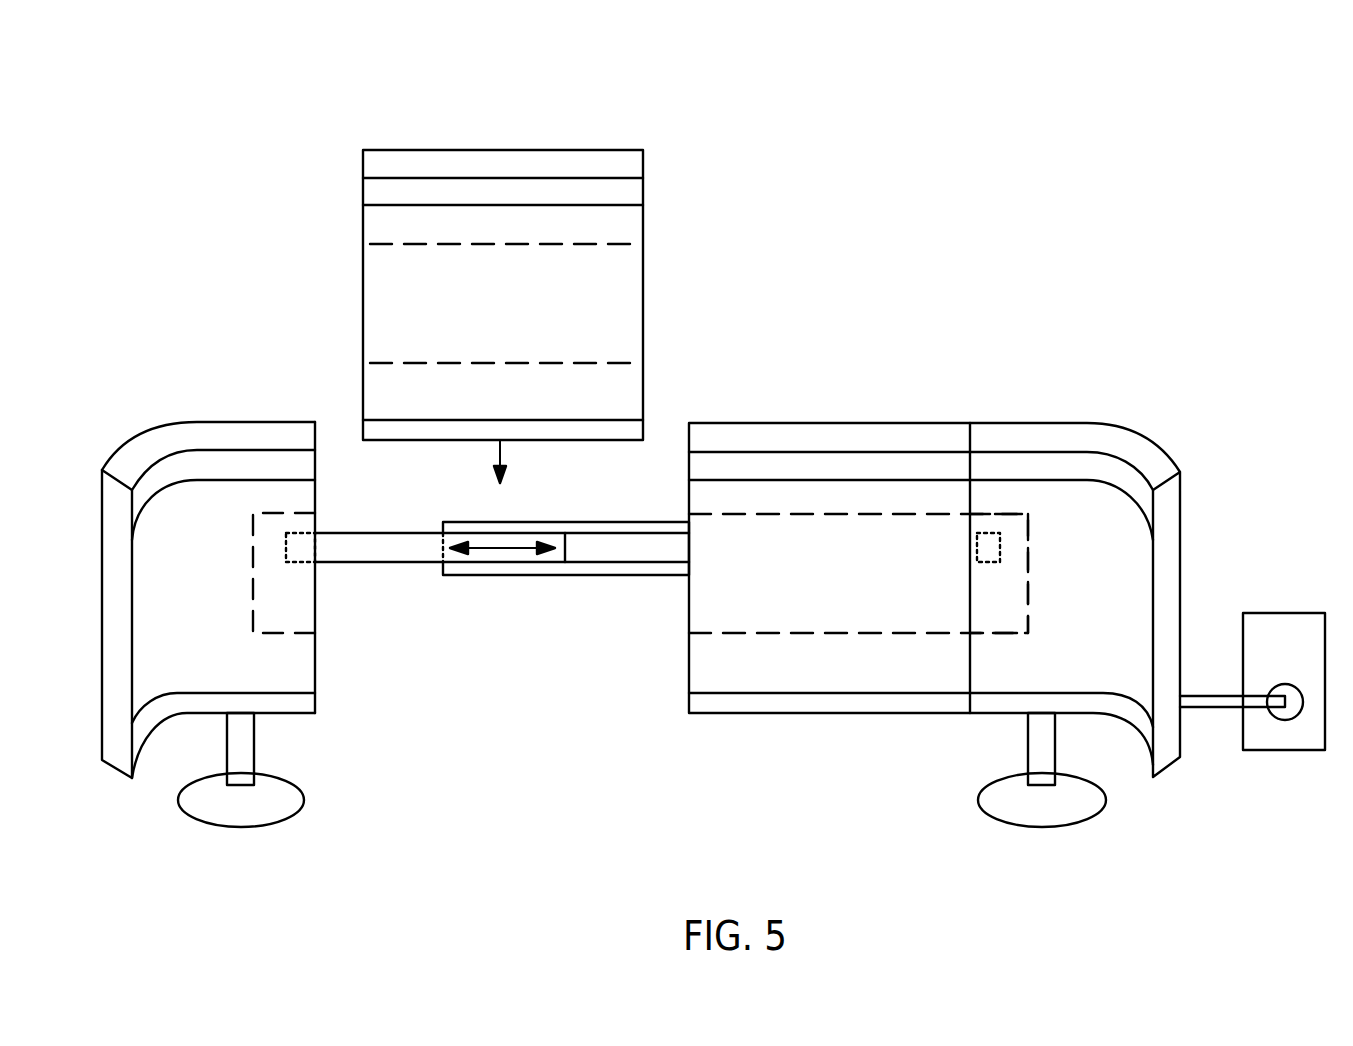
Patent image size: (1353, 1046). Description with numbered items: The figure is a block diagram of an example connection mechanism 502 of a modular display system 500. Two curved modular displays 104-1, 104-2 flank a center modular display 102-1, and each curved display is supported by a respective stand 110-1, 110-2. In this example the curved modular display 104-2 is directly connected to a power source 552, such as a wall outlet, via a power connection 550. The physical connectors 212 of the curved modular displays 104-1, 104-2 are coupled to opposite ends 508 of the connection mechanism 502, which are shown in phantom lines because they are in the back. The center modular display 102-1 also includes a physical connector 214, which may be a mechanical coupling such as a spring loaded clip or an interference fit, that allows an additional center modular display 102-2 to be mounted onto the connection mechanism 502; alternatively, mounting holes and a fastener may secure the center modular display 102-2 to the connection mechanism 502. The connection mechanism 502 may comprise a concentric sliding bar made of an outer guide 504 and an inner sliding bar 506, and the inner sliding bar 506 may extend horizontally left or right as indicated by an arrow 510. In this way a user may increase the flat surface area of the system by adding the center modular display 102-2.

The modular display system 500 is at (129, 77).
The center modular display 102-1 is at (905, 423).
The center modular display 102-2 is at (527, 150).
The curved modular display 104-1 is at (227, 422).
The curved modular display 104-2 is at (1045, 423).
The stand 110-1 is at (303, 803).
The stand 110-2 is at (980, 803).
The physical connector 212 is at (253, 560).
The physical connector 214 is at (632, 298).
The connection mechanism 502 is at (500, 522).
The outer guide 504 is at (556, 522).
The inner sliding bar 506 is at (372, 533).
The opposite ends 508 is at (290, 562).
The arrow 510 is at (510, 575).
The power connection 550 is at (1200, 708).
The power source 552 is at (1300, 653).